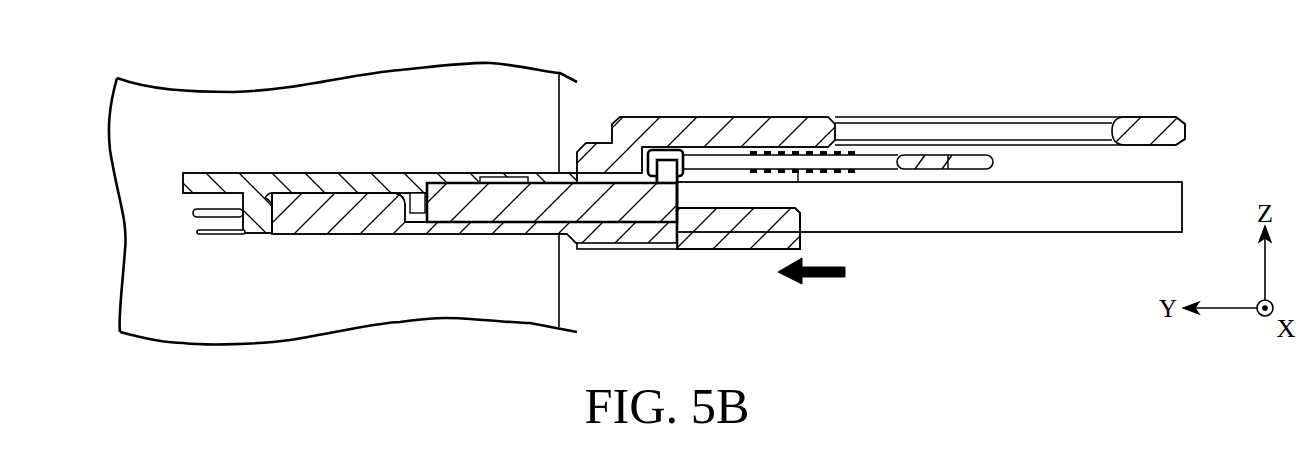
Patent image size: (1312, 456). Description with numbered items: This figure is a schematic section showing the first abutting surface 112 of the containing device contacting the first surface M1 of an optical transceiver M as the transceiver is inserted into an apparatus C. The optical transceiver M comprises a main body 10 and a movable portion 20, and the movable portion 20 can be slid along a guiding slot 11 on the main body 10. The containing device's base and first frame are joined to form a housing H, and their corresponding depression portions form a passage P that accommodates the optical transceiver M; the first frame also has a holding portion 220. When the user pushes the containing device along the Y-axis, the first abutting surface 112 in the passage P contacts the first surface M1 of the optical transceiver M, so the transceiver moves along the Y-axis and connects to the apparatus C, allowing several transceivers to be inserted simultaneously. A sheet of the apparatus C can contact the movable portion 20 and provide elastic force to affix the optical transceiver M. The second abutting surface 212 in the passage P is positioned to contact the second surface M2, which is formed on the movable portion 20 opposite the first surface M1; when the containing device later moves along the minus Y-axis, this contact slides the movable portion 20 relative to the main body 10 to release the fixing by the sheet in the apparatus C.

The main body 10 is at (340, 185).
The guiding slot 11 is at (483, 232).
The movable portion 20 is at (535, 190).
The first abutting surface 112 is at (672, 237).
The second abutting surface 212 is at (662, 150).
The holding portion 220 is at (1145, 114).
The apparatus C is at (232, 108).
The housing H is at (814, 116).
The passage P is at (778, 152).
The optical transceiver M is at (287, 238).
The first surface M1 is at (680, 195).
The second surface M2 is at (642, 157).